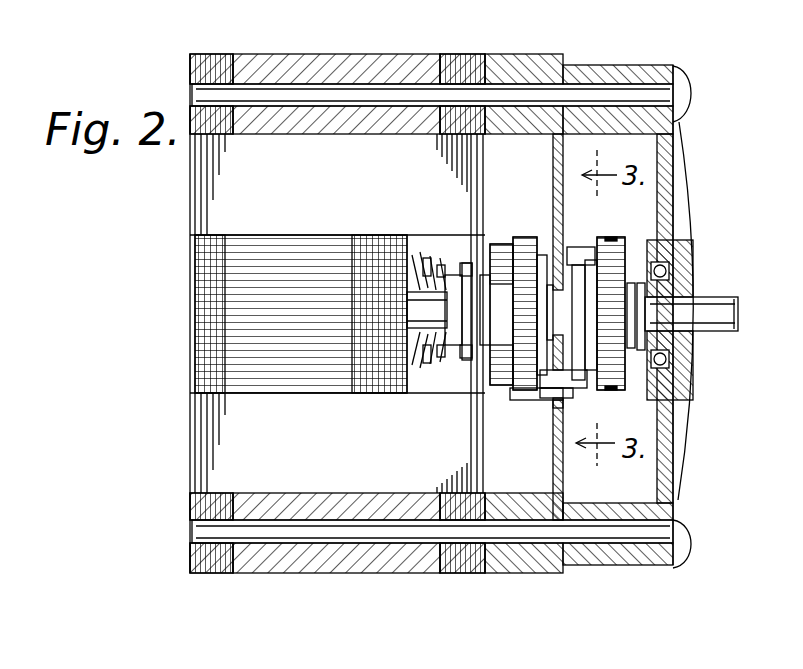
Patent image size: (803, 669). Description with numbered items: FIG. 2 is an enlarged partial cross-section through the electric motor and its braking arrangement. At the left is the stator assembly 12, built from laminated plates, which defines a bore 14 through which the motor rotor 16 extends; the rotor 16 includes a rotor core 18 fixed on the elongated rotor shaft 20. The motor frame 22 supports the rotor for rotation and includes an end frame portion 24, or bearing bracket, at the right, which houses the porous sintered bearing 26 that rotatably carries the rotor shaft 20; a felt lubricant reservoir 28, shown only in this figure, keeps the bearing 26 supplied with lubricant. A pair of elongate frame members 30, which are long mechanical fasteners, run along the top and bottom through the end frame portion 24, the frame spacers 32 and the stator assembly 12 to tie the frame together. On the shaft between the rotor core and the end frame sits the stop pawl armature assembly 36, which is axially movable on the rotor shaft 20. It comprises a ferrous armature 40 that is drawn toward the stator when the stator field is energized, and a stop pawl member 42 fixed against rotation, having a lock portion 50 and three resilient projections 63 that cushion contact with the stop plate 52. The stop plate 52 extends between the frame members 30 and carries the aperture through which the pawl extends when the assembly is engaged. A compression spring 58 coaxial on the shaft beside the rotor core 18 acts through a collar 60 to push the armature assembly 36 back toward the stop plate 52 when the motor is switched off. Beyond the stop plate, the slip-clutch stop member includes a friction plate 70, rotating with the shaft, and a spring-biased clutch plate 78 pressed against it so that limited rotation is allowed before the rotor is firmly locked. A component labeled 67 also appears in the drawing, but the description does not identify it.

The stator assembly 12 is at (230, 440).
The bore 14 is at (422, 250).
The motor rotor 16 is at (189, 330).
The rotor core 18 is at (226, 280).
The rotor shaft 20 is at (739, 315).
The motor frame 22 is at (600, 566).
The end frame portion 24 is at (670, 396).
The bearing 26 is at (690, 342).
The lubricant reservoir 28 is at (676, 268).
The elongate frame members 30 is at (369, 88).
The frame spacers 32 is at (512, 66).
The stop pawl armature assembly 36 is at (495, 402).
The armature 40 is at (500, 244).
The stop pawl member 42 is at (522, 402).
The lock portion 50 is at (590, 396).
The stop plate 52 is at (563, 480).
The compression spring 58 is at (433, 262).
The collar 60 is at (459, 330).
The projections 63 is at (540, 226).
The end plate 67 is at (661, 227).
The friction plate 70 is at (632, 238).
The clutch plate 78 is at (596, 246).